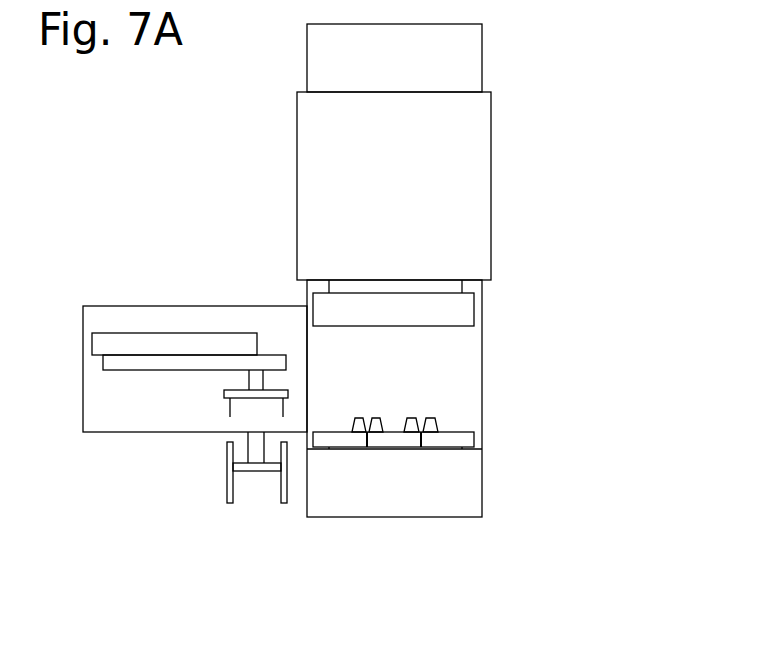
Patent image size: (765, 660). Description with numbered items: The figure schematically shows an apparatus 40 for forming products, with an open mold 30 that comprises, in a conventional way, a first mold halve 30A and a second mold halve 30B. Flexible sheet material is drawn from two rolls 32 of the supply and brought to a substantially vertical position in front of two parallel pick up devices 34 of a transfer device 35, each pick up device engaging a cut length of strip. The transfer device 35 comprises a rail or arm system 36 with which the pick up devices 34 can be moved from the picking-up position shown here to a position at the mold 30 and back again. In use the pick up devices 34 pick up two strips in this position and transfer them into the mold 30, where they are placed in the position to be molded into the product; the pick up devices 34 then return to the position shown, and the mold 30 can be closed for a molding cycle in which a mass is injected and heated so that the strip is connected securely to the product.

The apparatus 40 is at (543, 116).
The mold 30 is at (453, 400).
The second mold halve 30B is at (437, 309).
The first mold halve 30A is at (455, 438).
The transfer device 35 is at (155, 395).
The rail or arm system 36 is at (208, 362).
The pick up devices 34 is at (230, 410).
The rolls 32 is at (278, 518).